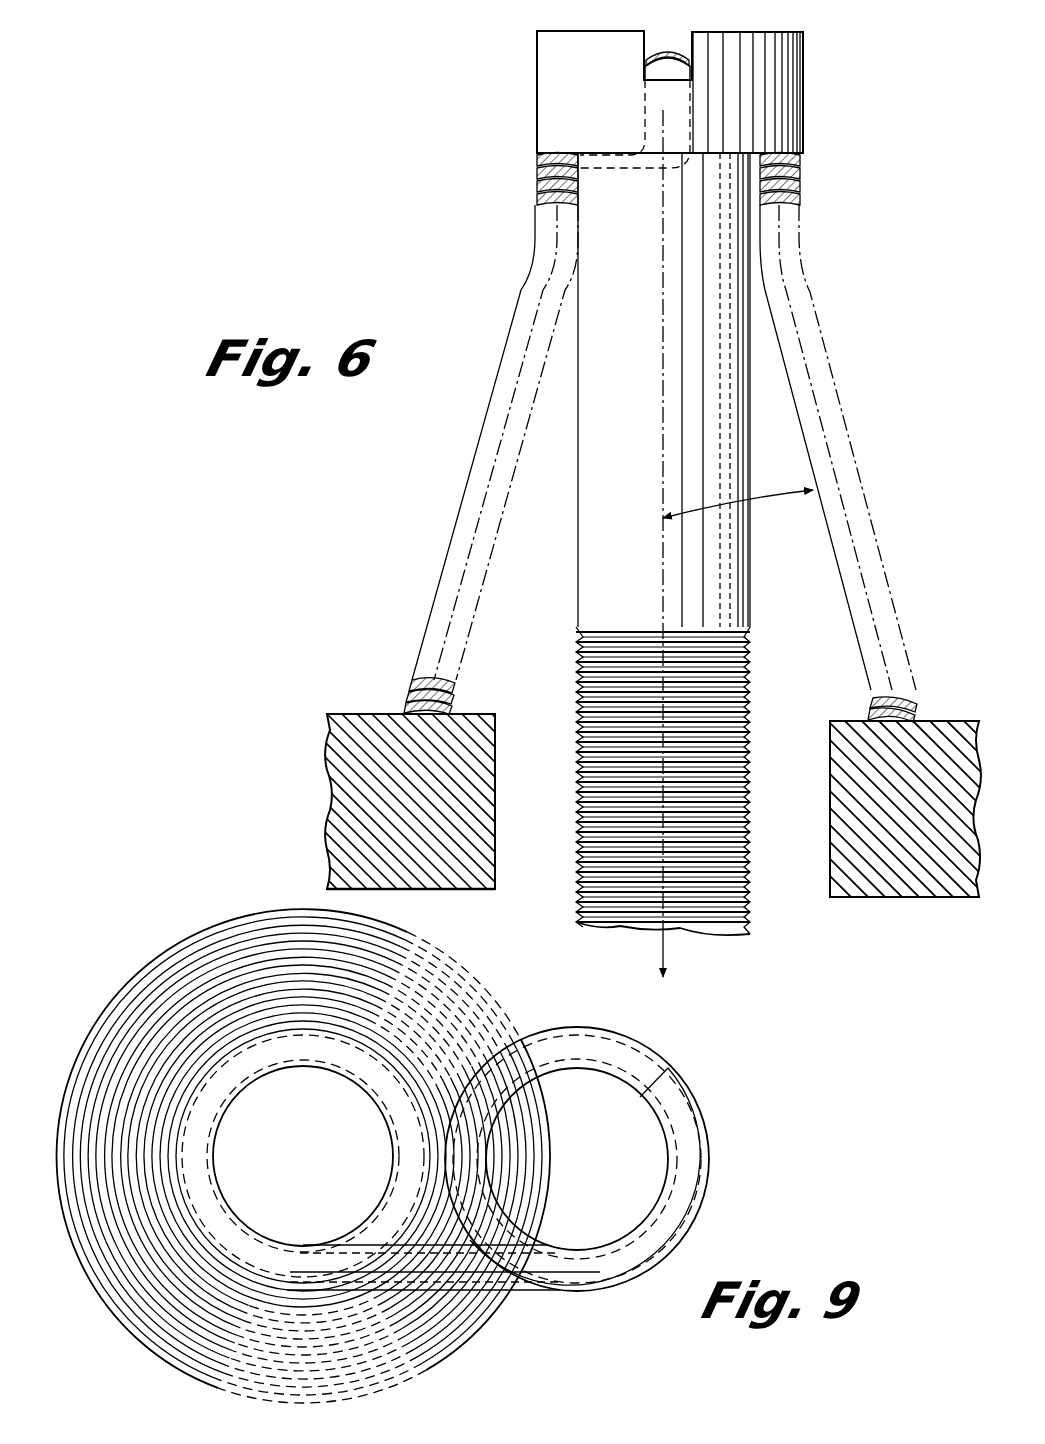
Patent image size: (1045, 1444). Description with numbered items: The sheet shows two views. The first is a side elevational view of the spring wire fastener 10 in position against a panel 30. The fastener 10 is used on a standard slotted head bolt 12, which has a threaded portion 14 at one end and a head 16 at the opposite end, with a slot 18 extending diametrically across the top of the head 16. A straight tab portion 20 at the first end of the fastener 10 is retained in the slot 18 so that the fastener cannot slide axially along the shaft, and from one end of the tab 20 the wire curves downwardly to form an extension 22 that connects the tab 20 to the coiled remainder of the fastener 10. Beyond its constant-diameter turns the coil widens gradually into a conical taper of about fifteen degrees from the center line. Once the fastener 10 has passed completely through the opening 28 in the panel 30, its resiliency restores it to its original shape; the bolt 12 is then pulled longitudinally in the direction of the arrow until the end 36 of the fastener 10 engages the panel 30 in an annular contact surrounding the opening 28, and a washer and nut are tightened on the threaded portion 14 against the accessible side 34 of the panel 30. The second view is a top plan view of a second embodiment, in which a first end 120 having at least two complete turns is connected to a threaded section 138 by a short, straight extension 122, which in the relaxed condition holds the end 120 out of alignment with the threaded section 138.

In FIG. 6, the spring wire fastener 10 is at (532, 188).
In FIG. 6, the bolt 12 is at (578, 567).
In FIG. 6, the threaded portion 14 is at (752, 900).
In FIG. 6, the head 16 is at (553, 85).
In FIG. 6, the slot 18 is at (690, 46).
In FIG. 6, the tab portion 20 is at (656, 54).
In FIG. 6, the extension 22 is at (690, 122).
In FIG. 6, the opening 28 is at (526, 778).
In FIG. 6, the panel 30 is at (337, 800).
In FIG. 6, the side of the panel 34 is at (462, 890).
In FIG. 6, the end of the spring wire fastener 36 is at (410, 712).
In FIG. 9, the first end 120 is at (686, 1180).
In FIG. 9, the extension 122 is at (470, 1270).
In FIG. 9, the threaded section 138 is at (368, 1085).